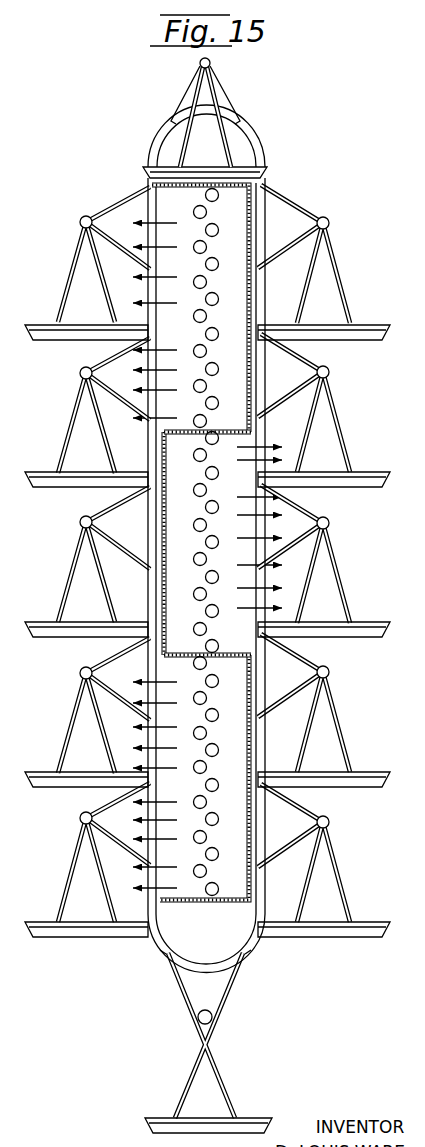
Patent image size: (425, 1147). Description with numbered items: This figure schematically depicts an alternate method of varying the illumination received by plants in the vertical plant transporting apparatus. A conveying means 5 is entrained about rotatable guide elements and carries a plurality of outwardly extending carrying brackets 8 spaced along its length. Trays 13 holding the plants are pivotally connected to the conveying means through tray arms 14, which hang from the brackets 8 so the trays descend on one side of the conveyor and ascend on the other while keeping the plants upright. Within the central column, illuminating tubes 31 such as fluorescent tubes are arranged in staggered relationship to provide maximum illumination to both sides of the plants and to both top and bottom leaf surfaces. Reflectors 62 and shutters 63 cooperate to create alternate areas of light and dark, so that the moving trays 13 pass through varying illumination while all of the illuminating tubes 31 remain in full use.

The conveying means 5 is at (262, 382).
The carrying brackets 8 is at (114, 205).
The trays 13 is at (33, 338).
The tray arms 14 is at (70, 268).
The illuminating tubes 31 is at (218, 320).
The reflectors 62 is at (250, 222).
The shutters 63 is at (258, 428).